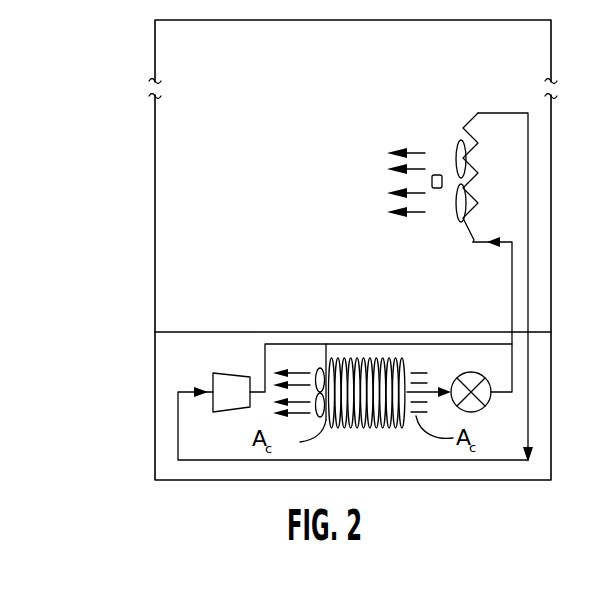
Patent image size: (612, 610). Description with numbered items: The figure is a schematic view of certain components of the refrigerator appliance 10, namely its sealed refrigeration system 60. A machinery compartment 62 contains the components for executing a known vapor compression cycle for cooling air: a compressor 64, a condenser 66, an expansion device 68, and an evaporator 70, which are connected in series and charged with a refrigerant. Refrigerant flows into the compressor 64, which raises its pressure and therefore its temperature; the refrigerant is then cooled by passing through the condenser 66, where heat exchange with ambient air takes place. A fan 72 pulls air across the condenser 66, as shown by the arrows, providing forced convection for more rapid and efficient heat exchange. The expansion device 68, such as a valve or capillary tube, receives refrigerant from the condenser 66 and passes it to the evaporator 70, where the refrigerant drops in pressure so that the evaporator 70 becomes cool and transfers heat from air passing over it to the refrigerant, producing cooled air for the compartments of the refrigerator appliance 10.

The refrigerator appliance 10 is at (80, 125).
The sealed refrigeration system 60 is at (345, 312).
The machinery compartment 62 is at (180, 362).
The compressor 64 is at (233, 373).
The condenser 66 is at (383, 370).
The expansion device 68 is at (468, 372).
The evaporator 70 is at (460, 142).
The fan 72 is at (316, 368).